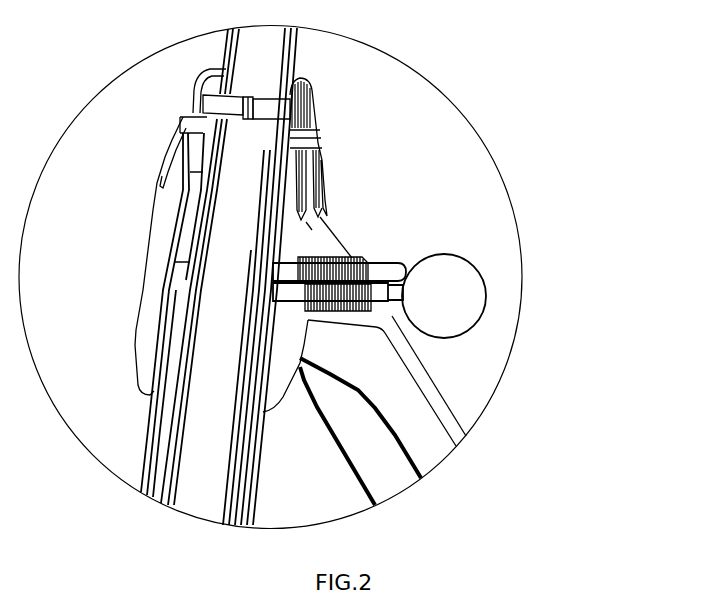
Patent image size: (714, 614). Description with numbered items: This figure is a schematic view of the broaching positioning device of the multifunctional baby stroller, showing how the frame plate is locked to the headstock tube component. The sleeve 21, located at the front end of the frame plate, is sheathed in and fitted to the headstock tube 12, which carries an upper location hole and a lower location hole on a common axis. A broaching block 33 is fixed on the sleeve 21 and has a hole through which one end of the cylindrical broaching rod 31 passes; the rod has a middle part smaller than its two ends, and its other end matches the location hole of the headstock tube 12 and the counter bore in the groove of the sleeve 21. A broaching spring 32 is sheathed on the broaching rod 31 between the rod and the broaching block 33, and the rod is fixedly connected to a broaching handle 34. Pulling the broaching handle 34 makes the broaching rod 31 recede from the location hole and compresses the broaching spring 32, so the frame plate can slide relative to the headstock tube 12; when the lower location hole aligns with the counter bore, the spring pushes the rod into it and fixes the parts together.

The headstock tube 12 is at (300, 162).
The sleeve 21 is at (305, 233).
The broaching rod 31 is at (340, 251).
The broaching spring 32 is at (370, 266).
The broaching block 33 is at (397, 306).
The broaching handle 34 is at (440, 320).